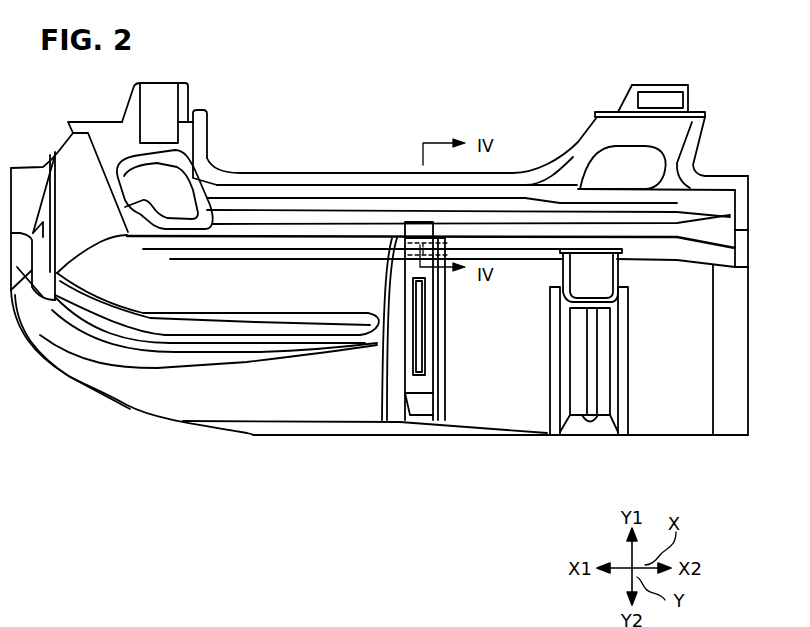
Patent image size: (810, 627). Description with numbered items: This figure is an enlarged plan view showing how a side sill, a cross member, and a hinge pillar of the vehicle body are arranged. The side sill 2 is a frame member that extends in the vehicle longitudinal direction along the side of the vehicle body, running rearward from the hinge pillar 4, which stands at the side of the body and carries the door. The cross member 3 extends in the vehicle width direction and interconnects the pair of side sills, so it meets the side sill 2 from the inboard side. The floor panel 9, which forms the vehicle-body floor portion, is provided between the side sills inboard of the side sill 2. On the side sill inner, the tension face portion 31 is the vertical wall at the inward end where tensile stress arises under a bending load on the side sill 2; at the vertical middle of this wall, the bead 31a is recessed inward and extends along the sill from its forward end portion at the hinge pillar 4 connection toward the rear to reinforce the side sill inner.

The side sill 2 is at (337, 164).
The cross member 3 is at (415, 382).
The hinge pillar 4 is at (170, 107).
The floor panel 9 is at (316, 392).
The tension face portion 31 is at (227, 260).
The bead 31a is at (267, 249).